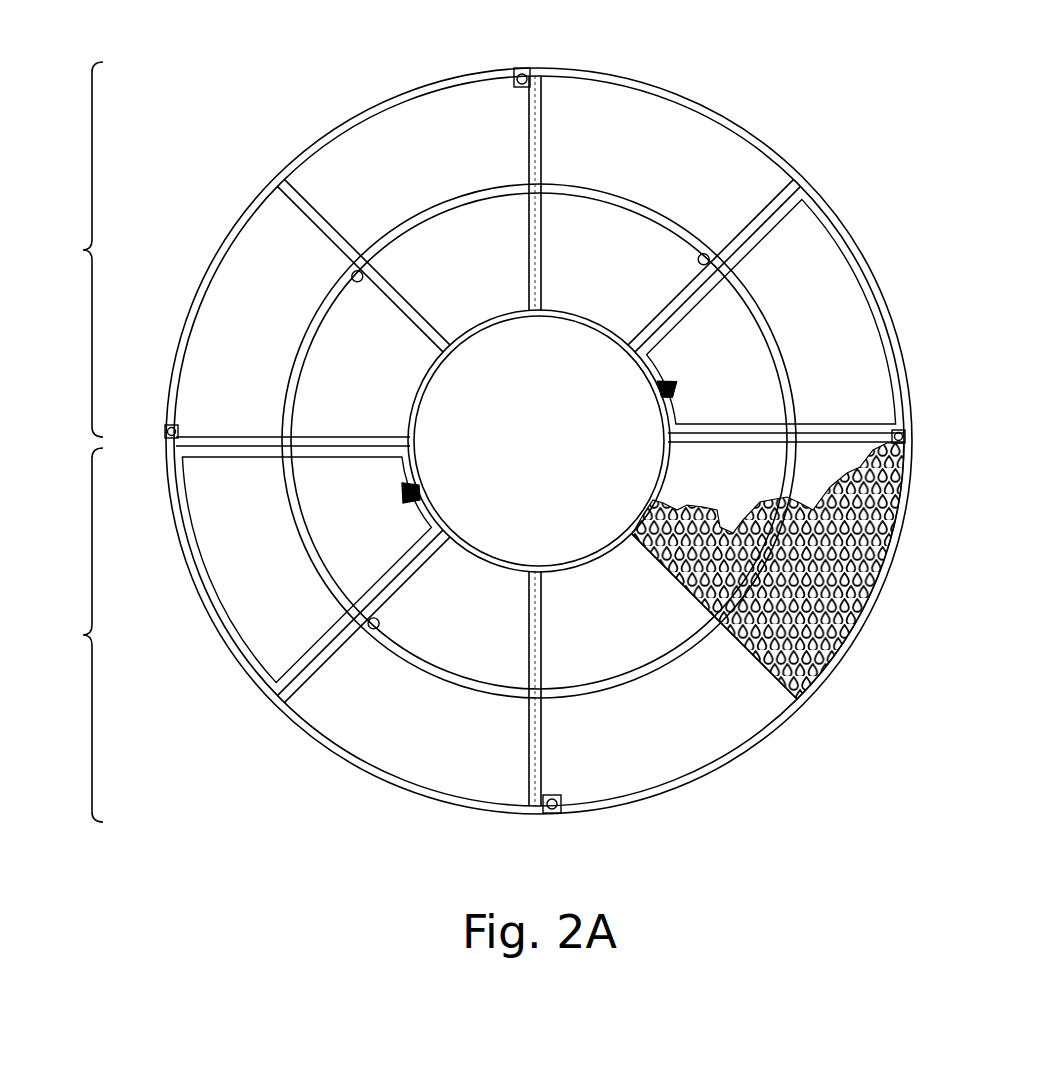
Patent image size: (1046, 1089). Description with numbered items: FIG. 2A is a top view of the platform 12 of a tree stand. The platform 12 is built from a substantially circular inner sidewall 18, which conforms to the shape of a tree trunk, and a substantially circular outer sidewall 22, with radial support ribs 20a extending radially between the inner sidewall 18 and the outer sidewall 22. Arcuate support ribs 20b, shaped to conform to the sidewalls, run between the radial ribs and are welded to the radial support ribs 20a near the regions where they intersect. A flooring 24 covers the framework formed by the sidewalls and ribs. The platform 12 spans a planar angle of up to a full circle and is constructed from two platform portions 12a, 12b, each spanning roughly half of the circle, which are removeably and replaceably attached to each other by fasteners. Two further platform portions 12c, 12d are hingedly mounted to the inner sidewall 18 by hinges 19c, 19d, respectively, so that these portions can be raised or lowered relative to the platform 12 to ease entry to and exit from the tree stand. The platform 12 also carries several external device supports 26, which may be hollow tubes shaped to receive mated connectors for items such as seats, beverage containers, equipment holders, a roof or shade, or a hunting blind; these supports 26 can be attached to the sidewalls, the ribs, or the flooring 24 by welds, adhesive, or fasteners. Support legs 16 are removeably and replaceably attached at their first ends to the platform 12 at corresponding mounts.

The platform 12 is at (533, 431).
The platform portion 12a is at (64, 249).
The platform portion 12b is at (64, 635).
The platform portion 12c is at (858, 300).
The platform portion 12d is at (215, 566).
The support leg 16 is at (514, 72).
The inner sidewall 18 is at (514, 563).
The hinge 19c is at (656, 390).
The hinge 19d is at (418, 492).
The radial support ribs 20a is at (527, 108).
The arcuate support ribs 20b is at (440, 204).
The outer sidewall 22 is at (566, 69).
The flooring 24 is at (762, 493).
The external device supports 26 is at (356, 283).